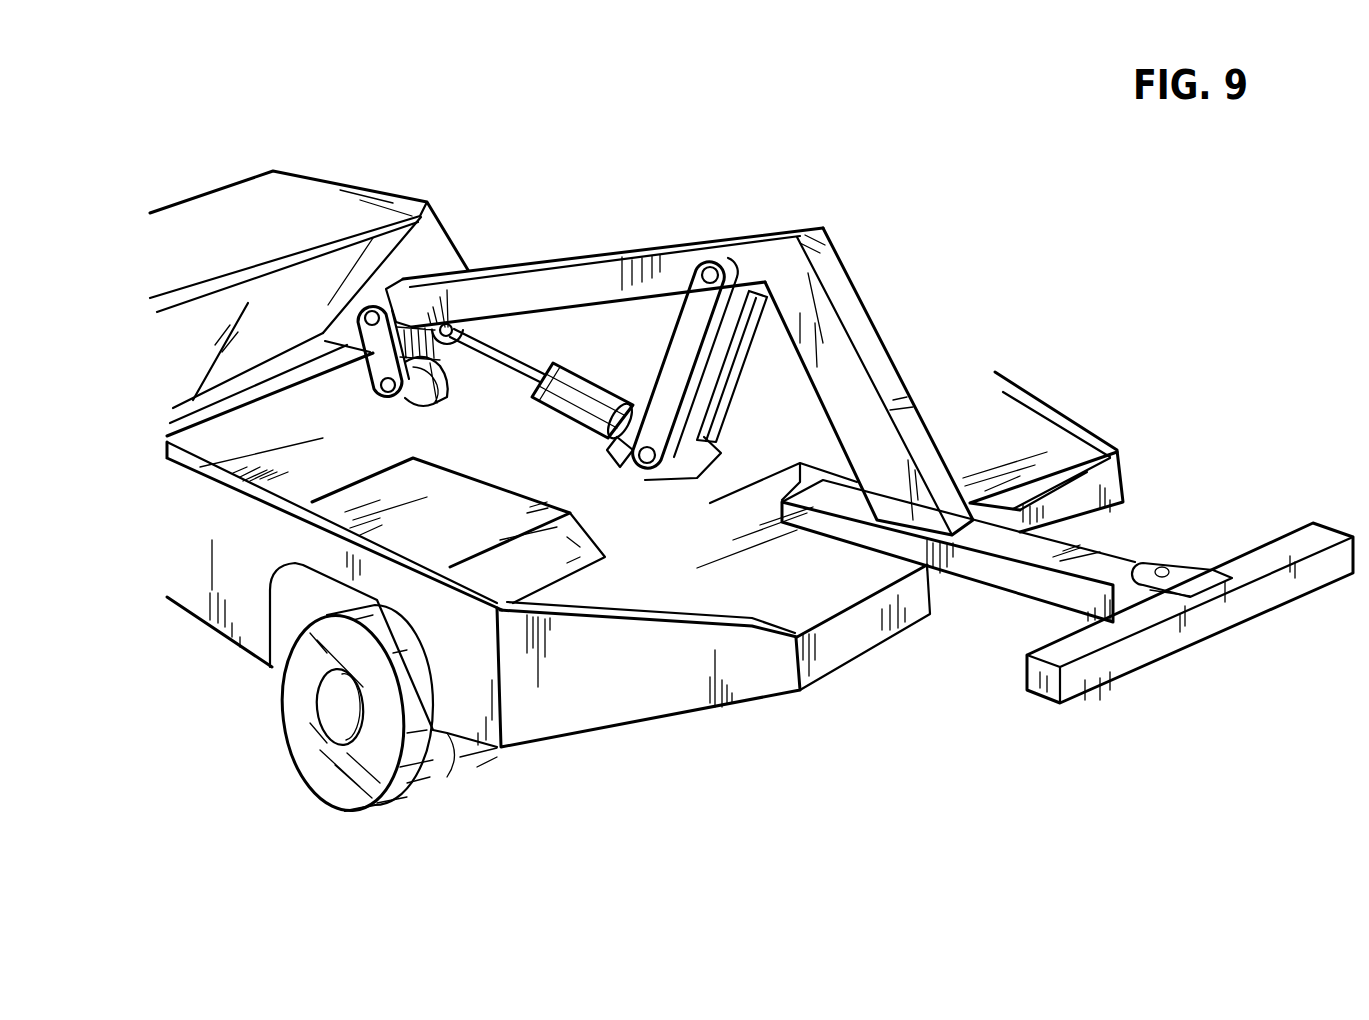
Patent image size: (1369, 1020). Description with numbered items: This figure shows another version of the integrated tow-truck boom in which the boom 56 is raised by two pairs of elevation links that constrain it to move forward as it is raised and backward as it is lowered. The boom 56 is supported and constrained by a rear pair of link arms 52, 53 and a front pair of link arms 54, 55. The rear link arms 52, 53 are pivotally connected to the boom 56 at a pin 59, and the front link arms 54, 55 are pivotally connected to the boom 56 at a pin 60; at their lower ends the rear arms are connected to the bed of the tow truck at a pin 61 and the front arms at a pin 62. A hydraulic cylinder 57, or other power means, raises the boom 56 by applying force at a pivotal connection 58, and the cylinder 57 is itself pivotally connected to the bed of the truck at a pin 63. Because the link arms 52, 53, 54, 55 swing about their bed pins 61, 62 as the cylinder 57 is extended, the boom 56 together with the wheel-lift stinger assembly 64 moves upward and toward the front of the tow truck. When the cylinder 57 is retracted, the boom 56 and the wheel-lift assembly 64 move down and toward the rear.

The rear link arm 52 is at (693, 330).
The rear link arm 53 is at (744, 357).
The front link arm 54 is at (325, 341).
The front link arm 55 is at (450, 380).
The boom 56 is at (657, 263).
The hydraulic cylinder 57 is at (590, 397).
The pivotal connection 58 is at (447, 324).
The pin 59 is at (713, 262).
The pin 60 is at (372, 311).
The pin 61 is at (646, 470).
The pin 62 is at (384, 392).
The pin 63 is at (608, 445).
The wheel-lift stinger assembly 64 is at (1120, 563).